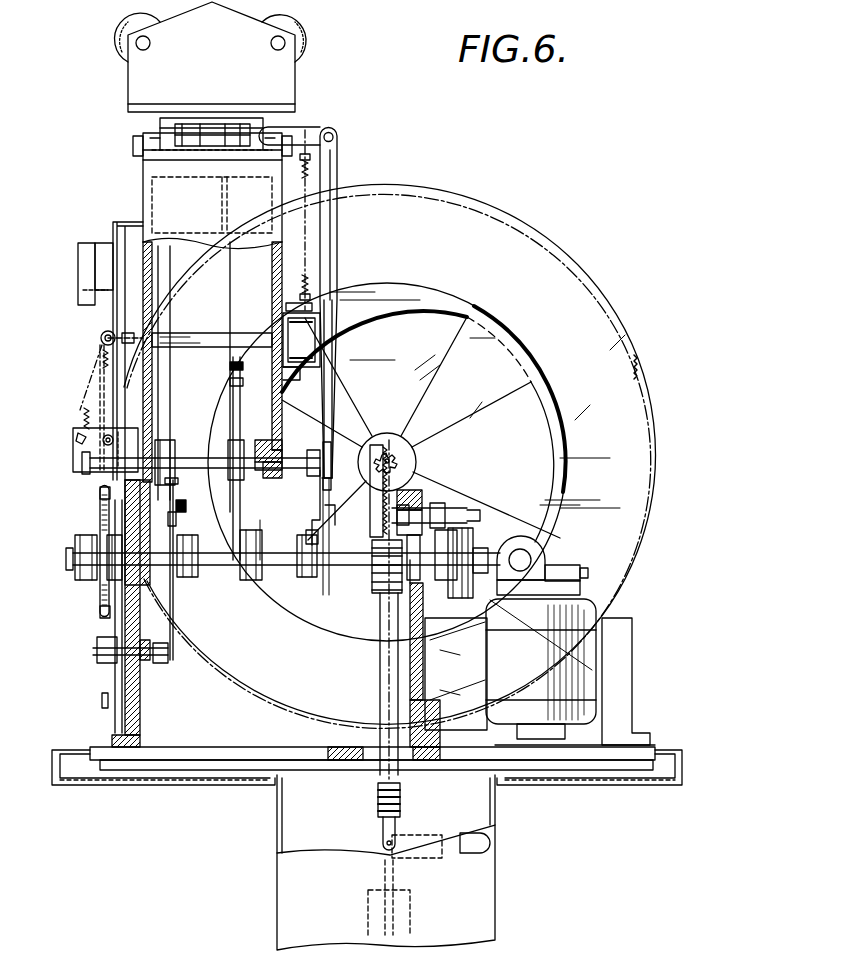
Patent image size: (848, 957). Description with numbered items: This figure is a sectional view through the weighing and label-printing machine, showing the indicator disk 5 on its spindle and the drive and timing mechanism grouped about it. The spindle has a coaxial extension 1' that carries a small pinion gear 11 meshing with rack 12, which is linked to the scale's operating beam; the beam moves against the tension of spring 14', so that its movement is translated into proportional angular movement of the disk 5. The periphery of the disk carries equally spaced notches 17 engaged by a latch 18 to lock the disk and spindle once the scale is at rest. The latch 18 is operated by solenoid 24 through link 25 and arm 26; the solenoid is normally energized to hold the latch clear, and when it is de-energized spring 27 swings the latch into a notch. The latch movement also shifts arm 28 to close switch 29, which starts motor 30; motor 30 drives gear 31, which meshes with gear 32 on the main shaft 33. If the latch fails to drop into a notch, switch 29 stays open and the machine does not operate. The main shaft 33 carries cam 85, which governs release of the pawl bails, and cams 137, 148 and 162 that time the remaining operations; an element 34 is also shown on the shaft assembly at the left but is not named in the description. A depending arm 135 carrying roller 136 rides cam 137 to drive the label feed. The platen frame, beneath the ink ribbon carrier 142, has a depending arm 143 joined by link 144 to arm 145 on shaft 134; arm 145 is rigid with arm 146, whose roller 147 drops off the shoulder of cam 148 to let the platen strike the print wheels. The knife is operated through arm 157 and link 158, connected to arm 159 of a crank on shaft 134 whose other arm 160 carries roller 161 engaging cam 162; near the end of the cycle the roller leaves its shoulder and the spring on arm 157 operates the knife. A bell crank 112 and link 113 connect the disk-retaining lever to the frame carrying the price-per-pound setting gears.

The ink ribbon carrier 142 is at (292, 85).
The arm 157 is at (308, 132).
The link 158 is at (337, 167).
The depending arm 143 is at (240, 271).
The solenoid 24 is at (303, 338).
The disk 5 is at (560, 278).
The notches 17 is at (636, 363).
The pinion gear 11 is at (395, 457).
The spindle extension 1' is at (415, 459).
The rack 12 is at (380, 489).
The spring 14' is at (414, 816).
The shaft 134 is at (188, 453).
The depending arm 135 is at (177, 495).
The link 144 is at (229, 370).
The arm 145 is at (268, 402).
The link 25 is at (197, 338).
The main shaft 33 is at (212, 568).
The gear 34 is at (95, 588).
The cam 85 is at (100, 507).
The arm 146 is at (207, 550).
The roller 136 is at (178, 510).
The cam 137 is at (179, 532).
The roller 147 is at (278, 575).
The cam 148 is at (265, 620).
The cam 162 is at (325, 596).
The roller 161 is at (348, 510).
The arm 160 is at (329, 478).
The arm 159 is at (329, 427).
The link 113 is at (175, 625).
The bell crank 112 is at (115, 683).
The gear 32 is at (460, 537).
The gear 31 is at (462, 593).
The motor 30 is at (577, 597).
The switch 29 is at (100, 288).
The arm 28 is at (113, 320).
The arm 26 is at (110, 380).
The spring 27 is at (80, 410).
The latch 18 is at (105, 457).